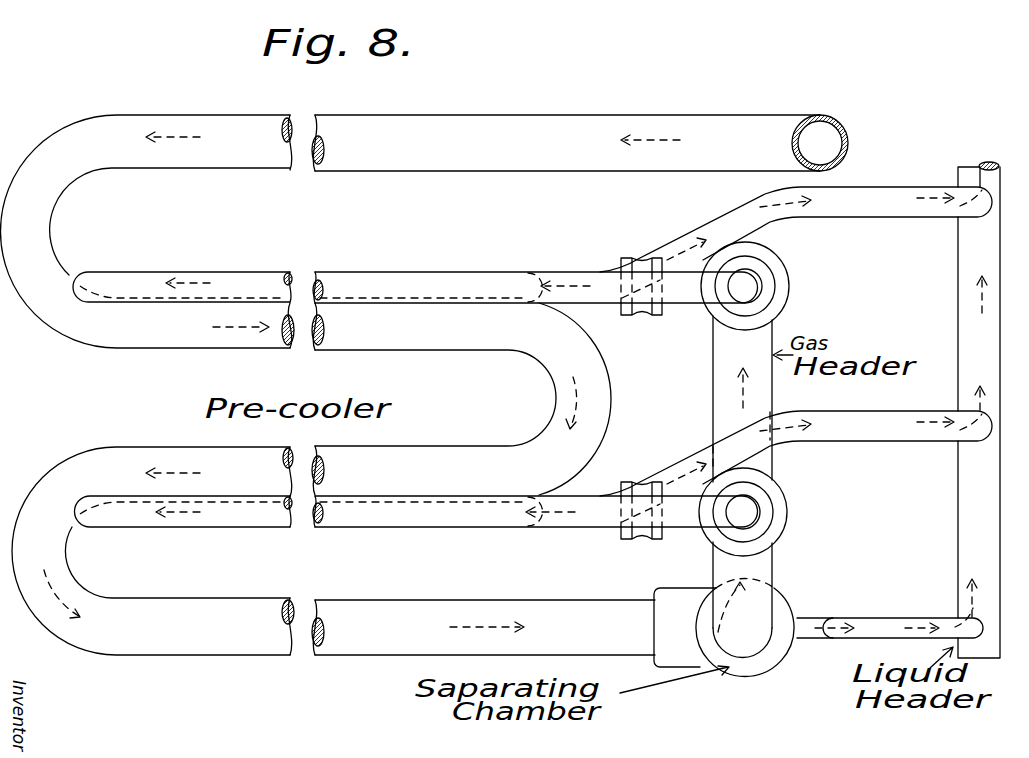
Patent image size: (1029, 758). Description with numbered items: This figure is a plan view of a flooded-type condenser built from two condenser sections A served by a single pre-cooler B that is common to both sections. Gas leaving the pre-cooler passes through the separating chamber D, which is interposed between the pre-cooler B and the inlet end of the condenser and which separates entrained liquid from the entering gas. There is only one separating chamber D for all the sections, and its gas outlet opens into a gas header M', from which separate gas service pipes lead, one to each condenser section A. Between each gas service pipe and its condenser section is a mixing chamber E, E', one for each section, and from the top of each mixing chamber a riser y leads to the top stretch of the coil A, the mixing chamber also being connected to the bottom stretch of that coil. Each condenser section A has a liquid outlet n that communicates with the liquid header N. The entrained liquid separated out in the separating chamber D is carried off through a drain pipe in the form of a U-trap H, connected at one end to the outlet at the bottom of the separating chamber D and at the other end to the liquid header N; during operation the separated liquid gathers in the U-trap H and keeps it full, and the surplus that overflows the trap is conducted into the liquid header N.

The condenser section A is at (502, 262).
The pre-cooler B is at (462, 168).
The riser y is at (706, 299).
The mixing chamber E is at (761, 286).
The connector fitting E' is at (760, 512).
The liquid outlet n is at (885, 210).
The gas header M' is at (707, 487).
The liquid header N is at (966, 328).
The U-trap H is at (882, 613).
The separating chamber D is at (767, 648).